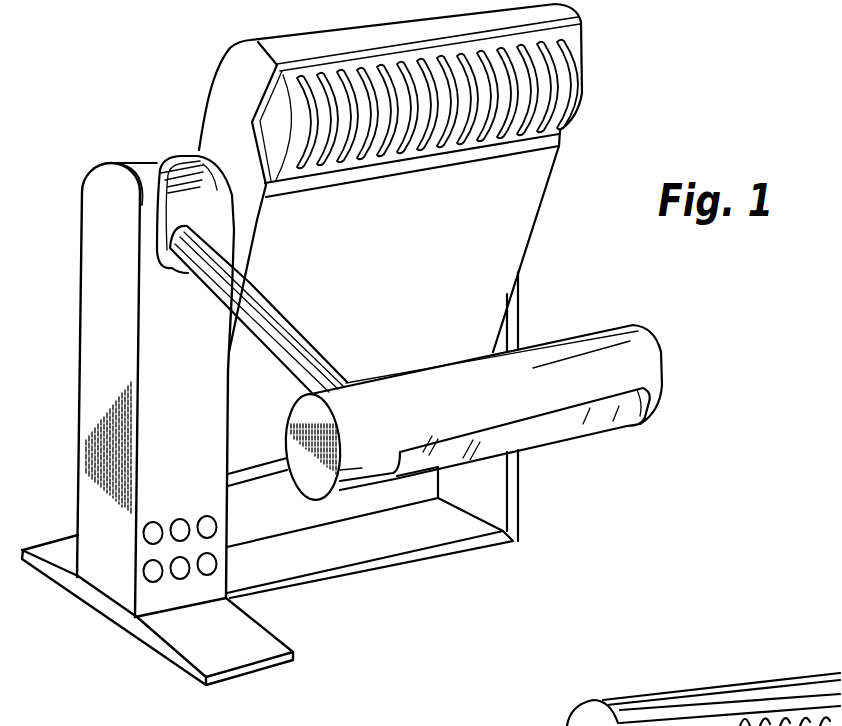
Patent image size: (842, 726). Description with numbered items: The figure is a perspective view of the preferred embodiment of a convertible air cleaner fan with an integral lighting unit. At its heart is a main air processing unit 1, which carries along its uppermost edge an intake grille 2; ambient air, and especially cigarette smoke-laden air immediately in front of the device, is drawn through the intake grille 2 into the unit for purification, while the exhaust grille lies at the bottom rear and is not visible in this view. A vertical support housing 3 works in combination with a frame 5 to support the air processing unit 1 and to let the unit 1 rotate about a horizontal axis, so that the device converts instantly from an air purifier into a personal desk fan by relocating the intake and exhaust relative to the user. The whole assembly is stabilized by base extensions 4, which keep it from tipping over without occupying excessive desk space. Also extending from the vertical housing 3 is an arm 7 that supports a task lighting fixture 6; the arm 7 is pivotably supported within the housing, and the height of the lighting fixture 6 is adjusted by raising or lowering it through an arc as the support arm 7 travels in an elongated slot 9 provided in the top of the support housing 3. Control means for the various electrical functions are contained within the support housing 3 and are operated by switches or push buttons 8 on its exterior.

The main air processing unit 1 is at (512, 216).
The intake grille 2 is at (578, 82).
The vertical support housing 3 is at (107, 400).
The base extensions 4 is at (208, 652).
The frame 5 is at (453, 533).
The task lighting fixture 6 is at (645, 368).
The arm 7 is at (282, 338).
The switches or push buttons 8 is at (158, 573).
The elongated slot 9 is at (156, 167).